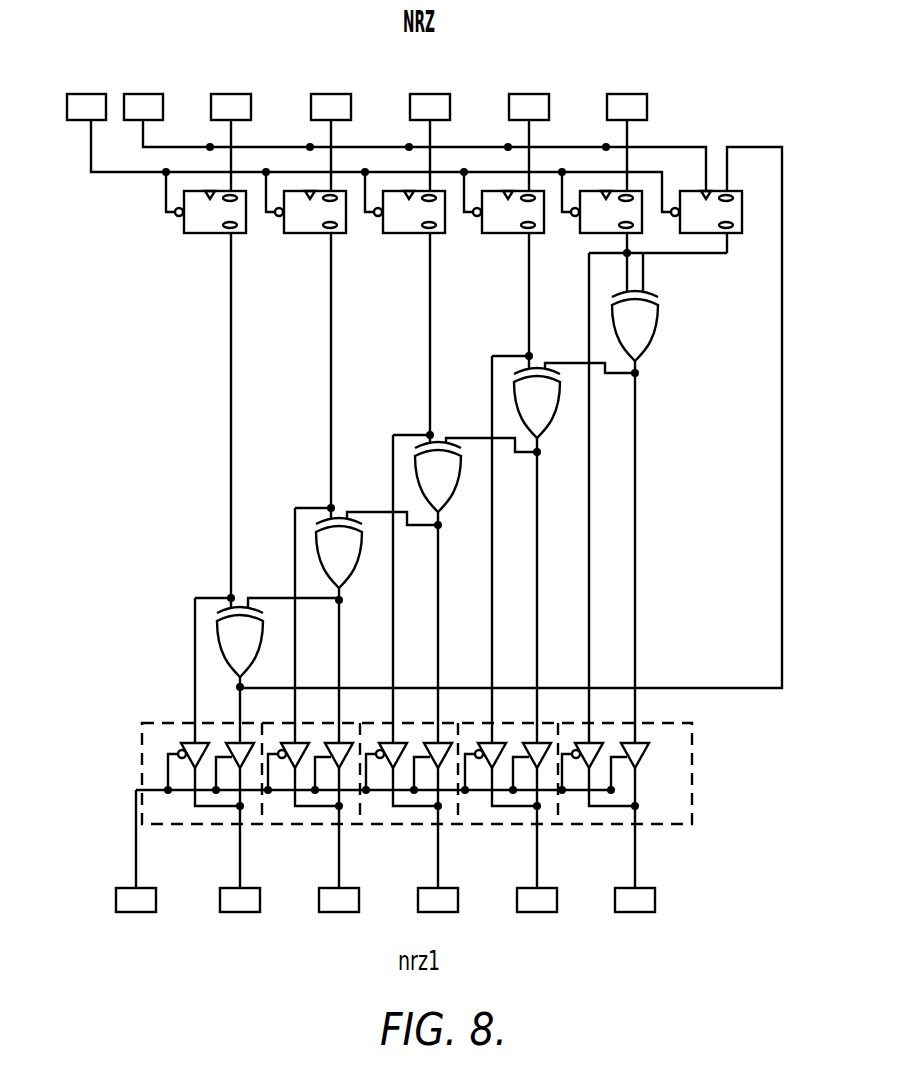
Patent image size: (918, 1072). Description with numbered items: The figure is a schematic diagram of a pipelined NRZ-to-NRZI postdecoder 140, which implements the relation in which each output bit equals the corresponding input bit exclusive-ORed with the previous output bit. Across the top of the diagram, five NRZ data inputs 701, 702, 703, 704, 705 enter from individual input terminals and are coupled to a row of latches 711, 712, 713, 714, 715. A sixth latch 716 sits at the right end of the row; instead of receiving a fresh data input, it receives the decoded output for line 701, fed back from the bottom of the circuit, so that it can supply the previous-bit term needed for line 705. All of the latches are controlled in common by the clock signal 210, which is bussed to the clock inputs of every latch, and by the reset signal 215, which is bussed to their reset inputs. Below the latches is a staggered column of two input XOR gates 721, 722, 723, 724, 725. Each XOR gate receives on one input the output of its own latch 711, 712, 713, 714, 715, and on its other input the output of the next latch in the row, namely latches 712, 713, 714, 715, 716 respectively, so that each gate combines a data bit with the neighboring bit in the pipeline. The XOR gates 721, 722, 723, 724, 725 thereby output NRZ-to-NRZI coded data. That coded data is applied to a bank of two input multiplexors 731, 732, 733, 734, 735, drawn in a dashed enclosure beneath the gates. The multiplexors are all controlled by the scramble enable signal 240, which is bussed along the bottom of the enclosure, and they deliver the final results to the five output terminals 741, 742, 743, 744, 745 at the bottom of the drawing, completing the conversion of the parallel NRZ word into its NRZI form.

The NRZ to NRZ1 encoder circuit 140 is at (752, 861).
The reset signal 215 is at (94, 93).
The clock signal 210 is at (151, 93).
The input 701 is at (239, 93).
The input 702 is at (339, 93).
The input 703 is at (438, 93).
The input 704 is at (537, 93).
The input 705 is at (635, 93).
The latch 711 is at (201, 235).
The latch 712 is at (299, 235).
The latch 713 is at (400, 235).
The latch 714 is at (499, 235).
The latch 715 is at (592, 235).
The latch 716 is at (742, 227).
The two input XOR gate 721 is at (256, 645).
The two input XOR gate 722 is at (355, 563).
The two input XOR gate 723 is at (455, 497).
The two input XOR gate 724 is at (555, 427).
The two input XOR gate 725 is at (657, 325).
The two input multiplexor 731 is at (142, 748).
The two input multiplexor 732 is at (313, 723).
The two input multiplexor 733 is at (418, 723).
The two input multiplexor 734 is at (513, 723).
The two input multiplexor 735 is at (613, 723).
The scramble enable signal 240 is at (152, 888).
The output 741 is at (256, 888).
The output 742 is at (355, 888).
The output 743 is at (454, 888).
The output 744 is at (553, 888).
The output 745 is at (651, 888).